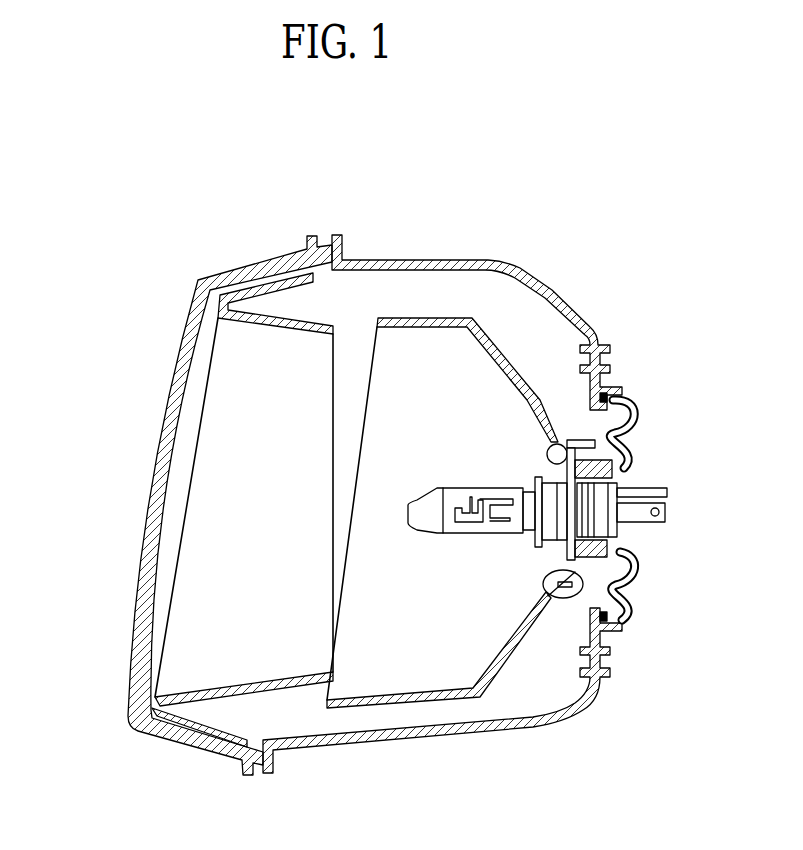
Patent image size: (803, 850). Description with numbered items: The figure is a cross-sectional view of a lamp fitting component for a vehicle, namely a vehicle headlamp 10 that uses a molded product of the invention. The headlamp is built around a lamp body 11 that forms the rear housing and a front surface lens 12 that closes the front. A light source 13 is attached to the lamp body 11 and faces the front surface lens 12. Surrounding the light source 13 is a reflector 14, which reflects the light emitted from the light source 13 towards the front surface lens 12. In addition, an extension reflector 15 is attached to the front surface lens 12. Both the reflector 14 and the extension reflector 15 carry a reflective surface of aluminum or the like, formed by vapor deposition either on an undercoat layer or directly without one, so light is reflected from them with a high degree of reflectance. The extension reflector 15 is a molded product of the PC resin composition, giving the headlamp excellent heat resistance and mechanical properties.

The vehicle headlamp 10 is at (300, 190).
The lamp body 11 is at (550, 291).
The front surface lens 12 is at (158, 456).
The light source 13 is at (428, 535).
The reflector 14 is at (438, 327).
The extension reflector 15 is at (247, 322).